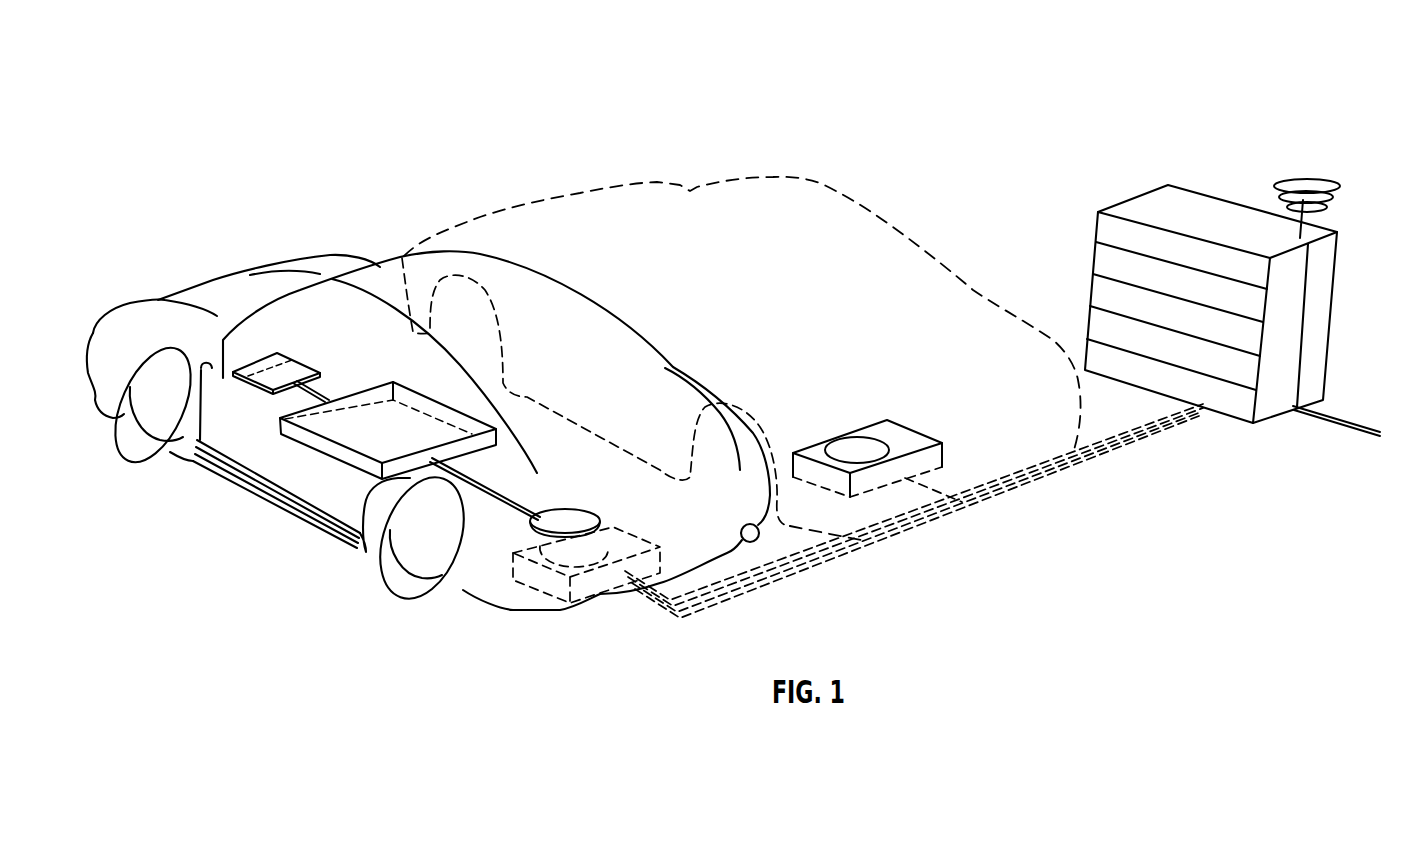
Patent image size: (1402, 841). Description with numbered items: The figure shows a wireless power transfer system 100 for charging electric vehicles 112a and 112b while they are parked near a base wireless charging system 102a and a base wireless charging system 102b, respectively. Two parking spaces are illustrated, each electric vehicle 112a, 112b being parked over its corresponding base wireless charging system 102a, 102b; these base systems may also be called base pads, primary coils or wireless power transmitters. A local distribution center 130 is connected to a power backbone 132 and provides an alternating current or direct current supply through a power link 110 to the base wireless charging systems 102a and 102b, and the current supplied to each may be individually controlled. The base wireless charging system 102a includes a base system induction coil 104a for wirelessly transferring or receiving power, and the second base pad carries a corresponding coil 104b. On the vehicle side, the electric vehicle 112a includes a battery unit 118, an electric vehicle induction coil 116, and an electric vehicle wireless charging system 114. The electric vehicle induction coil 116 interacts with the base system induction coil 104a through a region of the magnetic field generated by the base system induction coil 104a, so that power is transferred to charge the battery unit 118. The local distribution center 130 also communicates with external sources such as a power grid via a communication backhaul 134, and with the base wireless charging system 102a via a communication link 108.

The wireless power transfer system 100 is at (420, 100).
The base wireless charging system 102a is at (521, 553).
The base wireless charging system 102b is at (818, 443).
The base system induction coil 104a is at (652, 526).
The ground-side coil 104b is at (870, 438).
The communication link 108 is at (1077, 453).
The power link 110 is at (1065, 460).
The electric vehicle 112a is at (211, 286).
The electric vehicle 112b is at (587, 190).
The electric vehicle wireless charging system 114 is at (282, 417).
The electric vehicle induction coil 116 is at (565, 522).
The battery unit 118 is at (297, 362).
The local distribution center 130 is at (1135, 204).
The power backbone 132 is at (1352, 436).
The communication backhaul 134 is at (1310, 175).